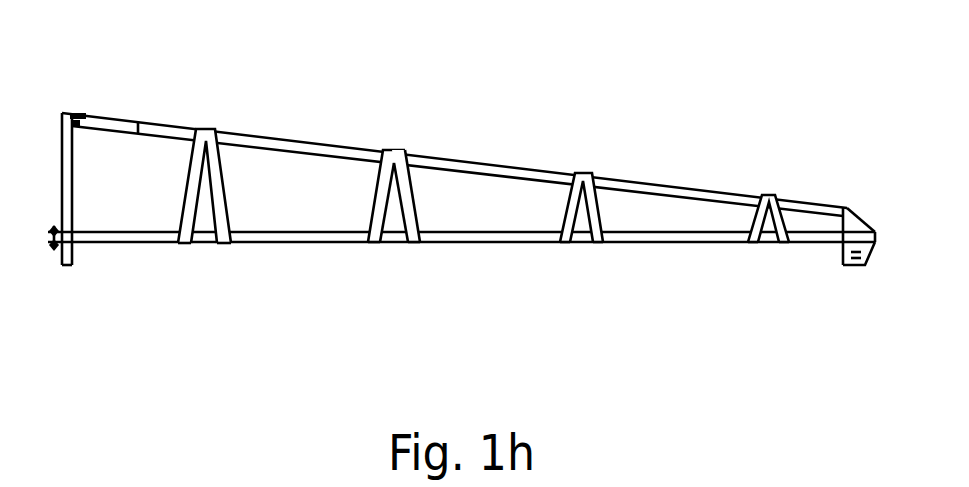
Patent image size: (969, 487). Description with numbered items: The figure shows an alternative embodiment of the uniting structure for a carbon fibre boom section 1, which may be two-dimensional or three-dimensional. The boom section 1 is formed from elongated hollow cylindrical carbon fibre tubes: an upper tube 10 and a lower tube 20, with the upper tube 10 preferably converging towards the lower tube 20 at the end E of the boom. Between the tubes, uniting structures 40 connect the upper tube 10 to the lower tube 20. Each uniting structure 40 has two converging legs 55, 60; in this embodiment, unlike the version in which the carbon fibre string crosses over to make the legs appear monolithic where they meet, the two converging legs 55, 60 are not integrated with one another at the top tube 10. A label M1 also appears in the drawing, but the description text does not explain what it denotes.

The boom section 1 is at (461, 197).
The upper tube 10 is at (300, 133).
The lower tube 20 is at (270, 247).
The uniting structure 40 is at (413, 187).
The leg 55 is at (374, 255).
The leg 60 is at (408, 308).
The first motor / mounting M1 is at (110, 114).
The end E is at (849, 275).